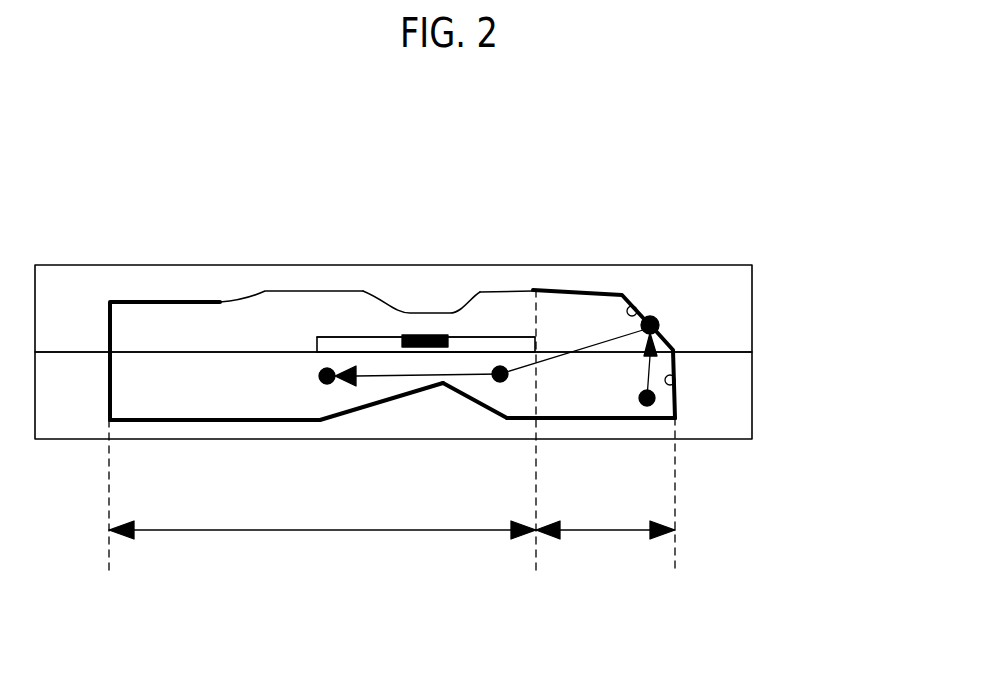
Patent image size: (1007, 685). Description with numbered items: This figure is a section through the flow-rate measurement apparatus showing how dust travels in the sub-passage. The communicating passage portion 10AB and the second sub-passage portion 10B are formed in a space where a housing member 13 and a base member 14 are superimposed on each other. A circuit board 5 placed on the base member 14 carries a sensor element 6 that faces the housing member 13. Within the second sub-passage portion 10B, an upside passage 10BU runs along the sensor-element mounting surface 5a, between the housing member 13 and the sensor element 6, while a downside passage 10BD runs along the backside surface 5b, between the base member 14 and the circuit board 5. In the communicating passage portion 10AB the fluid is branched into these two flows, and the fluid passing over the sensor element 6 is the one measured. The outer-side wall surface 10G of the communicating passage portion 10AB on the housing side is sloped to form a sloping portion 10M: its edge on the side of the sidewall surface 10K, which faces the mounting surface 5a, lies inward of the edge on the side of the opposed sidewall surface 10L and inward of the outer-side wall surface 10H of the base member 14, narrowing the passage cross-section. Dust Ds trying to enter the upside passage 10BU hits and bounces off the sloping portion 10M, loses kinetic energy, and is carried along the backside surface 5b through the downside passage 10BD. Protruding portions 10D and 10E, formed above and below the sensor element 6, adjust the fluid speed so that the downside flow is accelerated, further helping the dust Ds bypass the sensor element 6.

The circuit board 5 is at (387, 350).
The sensor-element mounting surface 5a is at (520, 337).
The backside surface 5b is at (325, 353).
The sensor element 6 is at (407, 335).
The housing member 13 is at (733, 307).
The base member 14 is at (733, 398).
The second sub-passage portion 10B is at (467, 406).
The upside passage 10BU is at (443, 327).
The downside passage 10BD is at (443, 385).
The protruding portion 10D is at (428, 300).
The protruding portion 10E is at (432, 403).
The sidewall surface 10K is at (563, 292).
The outer-side wall surface 10G is at (706, 270).
The sloping portion 10M is at (647, 316).
The outer-side wall surface 10H is at (676, 388).
The sidewall surface 10L is at (570, 417).
The communicating passage portion 10AB is at (585, 532).
The dust Ds is at (655, 418).